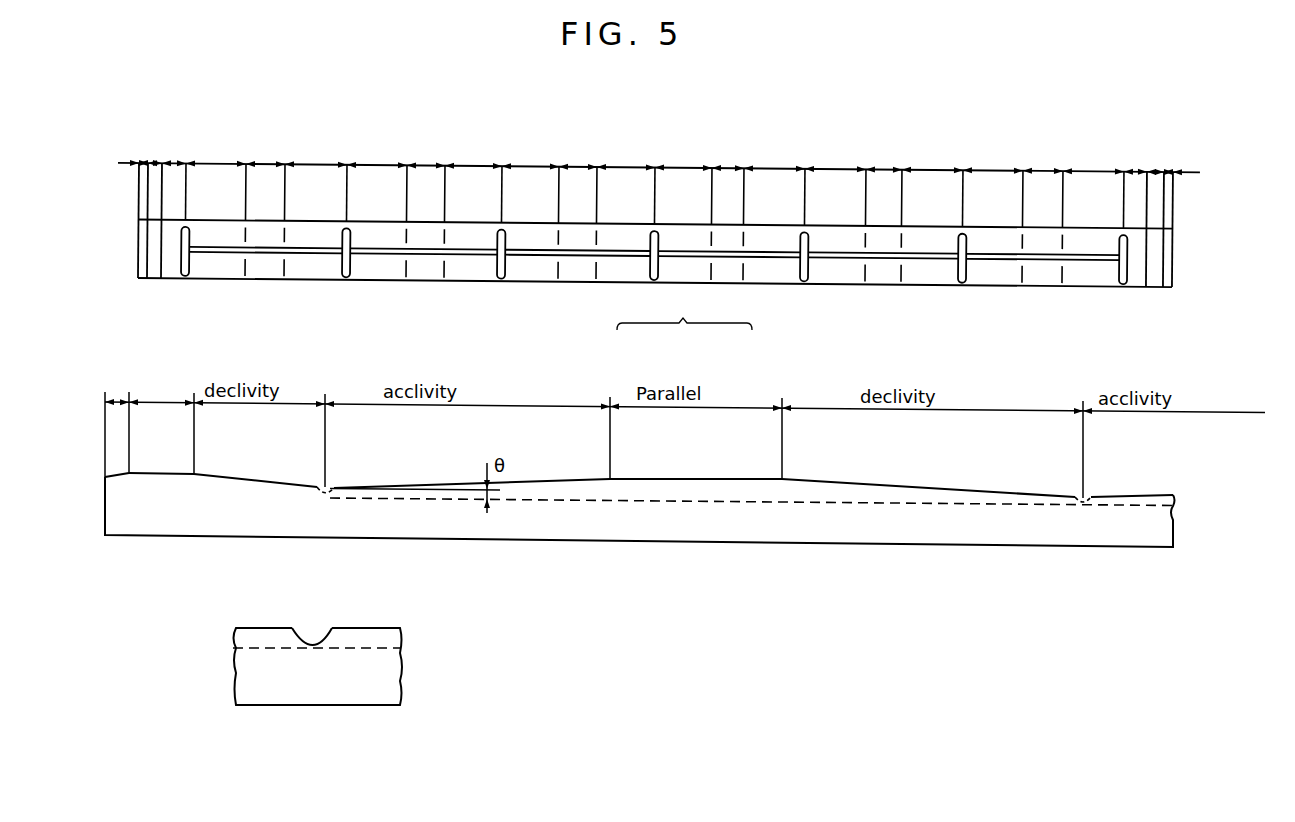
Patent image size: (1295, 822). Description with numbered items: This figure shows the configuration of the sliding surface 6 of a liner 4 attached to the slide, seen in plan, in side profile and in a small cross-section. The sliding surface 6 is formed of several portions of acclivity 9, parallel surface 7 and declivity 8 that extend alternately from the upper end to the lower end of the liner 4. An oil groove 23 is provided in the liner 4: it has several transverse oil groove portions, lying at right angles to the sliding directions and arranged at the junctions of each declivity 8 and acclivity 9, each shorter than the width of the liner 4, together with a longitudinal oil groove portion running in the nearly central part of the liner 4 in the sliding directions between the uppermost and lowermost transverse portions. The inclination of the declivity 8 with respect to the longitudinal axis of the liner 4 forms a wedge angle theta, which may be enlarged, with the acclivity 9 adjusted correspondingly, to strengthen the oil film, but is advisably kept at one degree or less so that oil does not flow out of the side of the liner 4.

The liner 4 is at (689, 230).
The oil groove 23 is at (969, 240).
The sliding surface 6 is at (692, 315).
The parallel surface 7 is at (157, 472).
The declivity 8 is at (247, 478).
The acclivity 9 is at (110, 470).